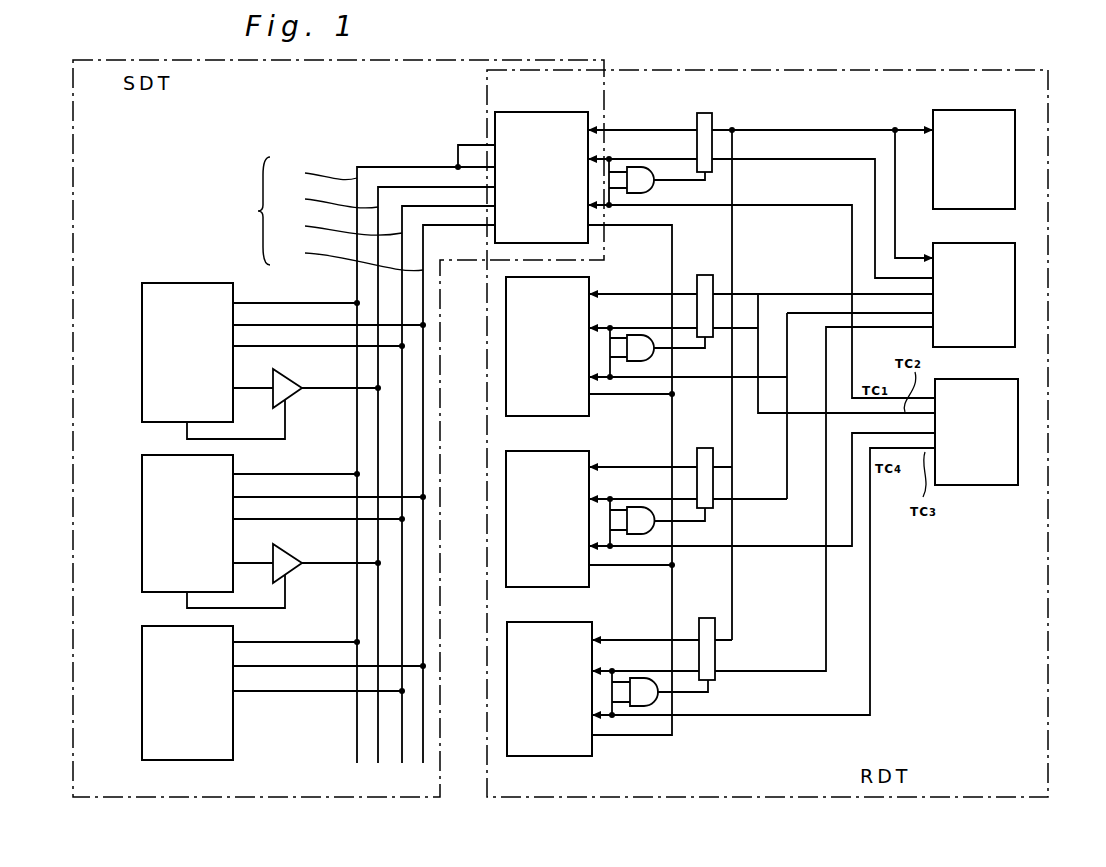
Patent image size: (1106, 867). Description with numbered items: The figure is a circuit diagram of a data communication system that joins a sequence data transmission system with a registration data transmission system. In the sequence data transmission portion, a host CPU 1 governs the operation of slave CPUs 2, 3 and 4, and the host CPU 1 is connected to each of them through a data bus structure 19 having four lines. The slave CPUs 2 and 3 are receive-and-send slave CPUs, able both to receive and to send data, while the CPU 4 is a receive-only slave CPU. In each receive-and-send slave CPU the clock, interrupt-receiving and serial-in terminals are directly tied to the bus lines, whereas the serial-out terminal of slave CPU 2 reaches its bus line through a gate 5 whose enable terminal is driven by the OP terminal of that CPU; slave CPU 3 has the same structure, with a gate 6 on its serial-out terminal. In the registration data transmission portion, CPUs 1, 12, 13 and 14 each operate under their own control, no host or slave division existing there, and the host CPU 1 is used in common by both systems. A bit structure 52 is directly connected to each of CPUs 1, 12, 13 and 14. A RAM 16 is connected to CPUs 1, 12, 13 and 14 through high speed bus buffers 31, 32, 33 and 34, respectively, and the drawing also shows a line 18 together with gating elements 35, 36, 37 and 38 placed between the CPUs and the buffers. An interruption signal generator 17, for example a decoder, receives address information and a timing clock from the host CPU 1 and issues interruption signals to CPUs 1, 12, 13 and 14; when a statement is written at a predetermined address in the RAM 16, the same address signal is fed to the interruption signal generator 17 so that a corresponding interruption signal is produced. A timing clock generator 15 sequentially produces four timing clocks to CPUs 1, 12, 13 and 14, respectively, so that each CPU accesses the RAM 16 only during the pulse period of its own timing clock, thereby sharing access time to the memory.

The host CPU 1 is at (538, 112).
The R/S slave CPU 2 is at (142, 349).
The R/S slave CPU 3 is at (142, 521).
The R slave CPU 4 is at (142, 696).
The gate 5 is at (290, 373).
The gate 6 is at (290, 548).
The CPU 12 is at (506, 358).
The CPU 13 is at (506, 535).
The CPU 14 is at (507, 695).
The timing clock generator 15 is at (1012, 421).
The RAM 16 is at (1015, 165).
The interruption signal generator 17 is at (1010, 283).
The bus line 18 is at (780, 130).
The data bus structure 19 is at (354, 454).
The high speed bus buffer 31 is at (712, 113).
The high speed bus buffer 32 is at (705, 275).
The high speed bus buffer 33 is at (705, 448).
The high speed bus buffer 34 is at (708, 618).
The AND gate 35 is at (645, 167).
The AND gate 36 is at (645, 335).
The AND gate 37 is at (645, 507).
The AND gate 38 is at (647, 678).
The bit structure 52 is at (672, 583).